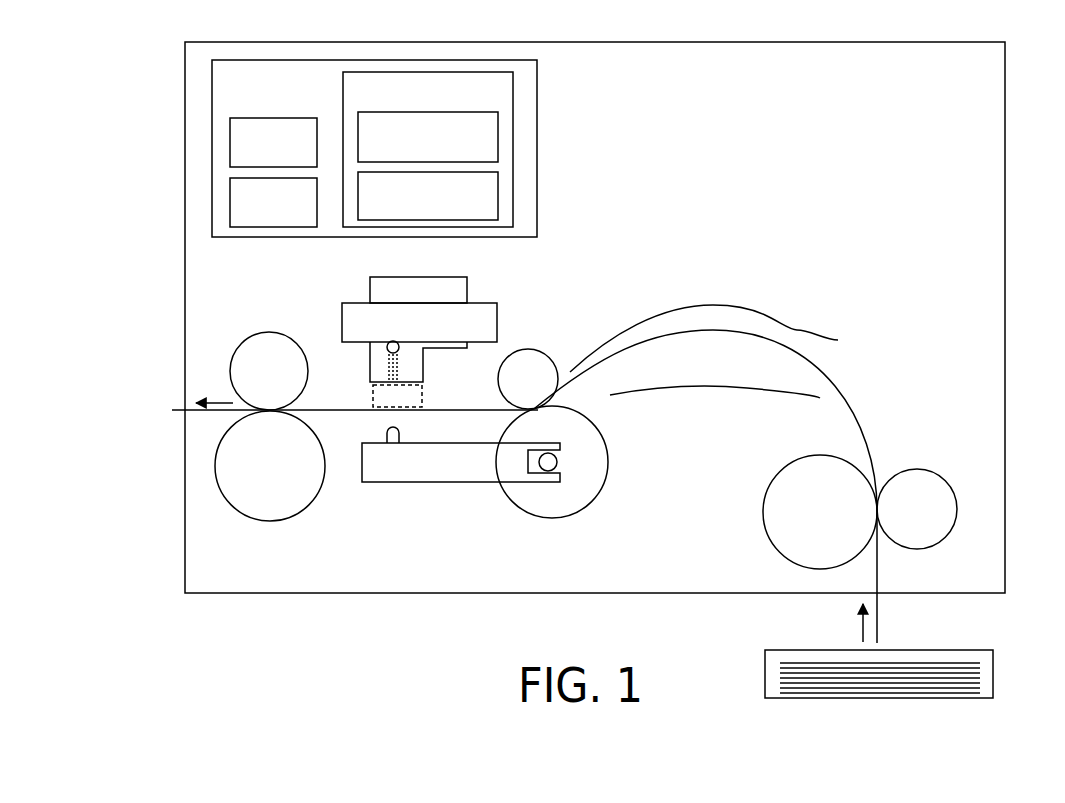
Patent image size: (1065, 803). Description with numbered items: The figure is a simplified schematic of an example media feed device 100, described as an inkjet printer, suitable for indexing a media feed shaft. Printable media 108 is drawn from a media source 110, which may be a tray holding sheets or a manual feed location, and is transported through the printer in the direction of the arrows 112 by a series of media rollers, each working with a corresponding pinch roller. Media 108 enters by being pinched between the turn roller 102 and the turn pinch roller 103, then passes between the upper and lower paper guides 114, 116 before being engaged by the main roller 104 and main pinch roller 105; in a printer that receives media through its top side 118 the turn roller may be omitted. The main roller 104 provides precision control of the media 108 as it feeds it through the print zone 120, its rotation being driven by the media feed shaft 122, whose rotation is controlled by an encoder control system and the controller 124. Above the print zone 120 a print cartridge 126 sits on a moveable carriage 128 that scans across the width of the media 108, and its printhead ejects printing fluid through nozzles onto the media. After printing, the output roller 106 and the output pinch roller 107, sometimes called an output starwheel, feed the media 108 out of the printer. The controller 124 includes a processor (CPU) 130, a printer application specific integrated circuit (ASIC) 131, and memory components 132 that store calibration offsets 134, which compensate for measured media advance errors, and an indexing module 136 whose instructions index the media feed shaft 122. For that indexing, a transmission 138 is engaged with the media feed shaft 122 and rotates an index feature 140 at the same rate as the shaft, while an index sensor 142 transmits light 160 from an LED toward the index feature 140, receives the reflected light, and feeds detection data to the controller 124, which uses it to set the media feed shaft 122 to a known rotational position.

The media feed device 100 is at (138, 126).
The turn roller 102 is at (778, 547).
The turn pinch roller 103 is at (938, 540).
The main roller 104 is at (575, 508).
The main pinch roller 105 is at (526, 351).
The output roller 106 is at (251, 518).
The output pinch roller 107 is at (257, 336).
The printable media 108 is at (356, 409).
The media source 110 is at (765, 682).
The direction arrows 112 is at (212, 402).
The upper paper guide 114 is at (760, 312).
The lower paper guide 116 is at (730, 393).
The top side 118 is at (880, 43).
The print zone 120 is at (423, 395).
The media feed shaft 122 is at (558, 460).
The controller 124 is at (254, 110).
The print cartridge 126 is at (370, 291).
The moveable carriage 128 is at (342, 322).
The processor (CPU) 130 is at (257, 161).
The printer application specific integrated circuit (ASIC) 131 is at (257, 221).
The memory components 132 is at (480, 101).
The calibration offsets 134 is at (476, 158).
The indexing module 136 is at (477, 218).
The transmission 138 is at (450, 483).
The index feature 140 is at (400, 436).
The index sensor 142 is at (395, 341).
The light 160 is at (383, 367).